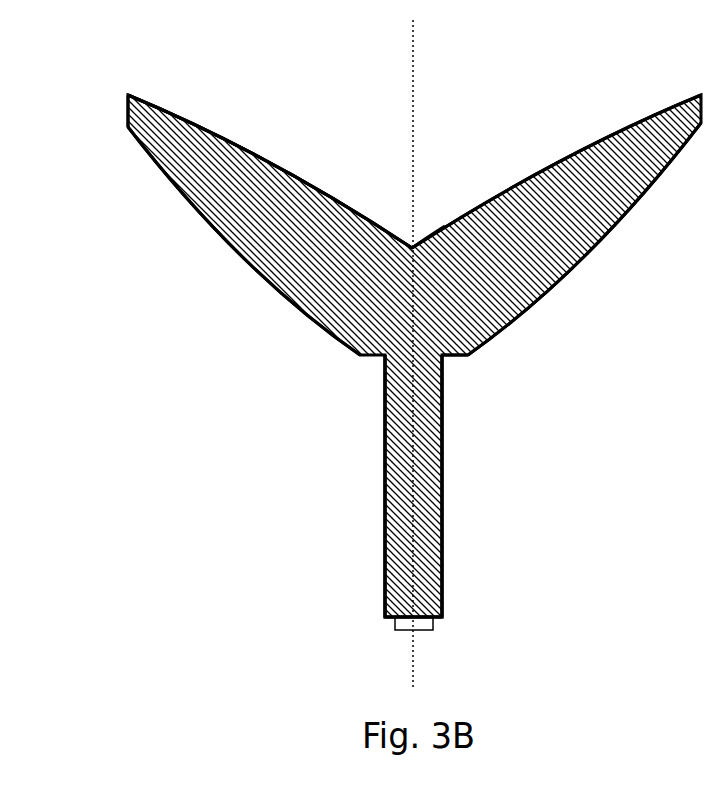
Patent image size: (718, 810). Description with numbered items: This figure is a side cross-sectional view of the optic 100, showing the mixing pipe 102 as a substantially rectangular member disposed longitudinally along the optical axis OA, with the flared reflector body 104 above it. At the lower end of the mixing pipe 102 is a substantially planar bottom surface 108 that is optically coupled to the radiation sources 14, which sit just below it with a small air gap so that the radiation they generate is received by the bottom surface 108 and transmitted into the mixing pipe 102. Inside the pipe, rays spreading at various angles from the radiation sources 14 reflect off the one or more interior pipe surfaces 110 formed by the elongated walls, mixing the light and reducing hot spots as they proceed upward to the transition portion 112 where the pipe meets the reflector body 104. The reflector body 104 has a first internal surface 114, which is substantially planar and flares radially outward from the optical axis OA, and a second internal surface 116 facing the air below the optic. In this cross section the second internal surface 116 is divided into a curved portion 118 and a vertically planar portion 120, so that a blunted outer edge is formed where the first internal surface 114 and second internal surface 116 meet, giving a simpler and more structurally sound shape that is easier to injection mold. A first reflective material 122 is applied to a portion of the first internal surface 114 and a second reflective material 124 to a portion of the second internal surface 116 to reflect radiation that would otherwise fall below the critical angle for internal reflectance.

The optic 100 is at (378, 57).
The optical axis OA is at (413, 45).
The mixing pipe 102 is at (538, 488).
The reflector body 104 is at (571, 302).
The bottom surface 108 is at (437, 615).
The interior pipe surfaces 110 is at (387, 512).
The transition portion 112 is at (452, 364).
The first internal surface 114 is at (562, 158).
The second internal surface 116 is at (283, 292).
The curved portion 118 is at (185, 200).
The vertically planar portion 120 is at (127, 124).
The first reflective material 122 is at (440, 228).
The second reflective material 124 is at (283, 292).
The radiation sources 14 is at (433, 627).